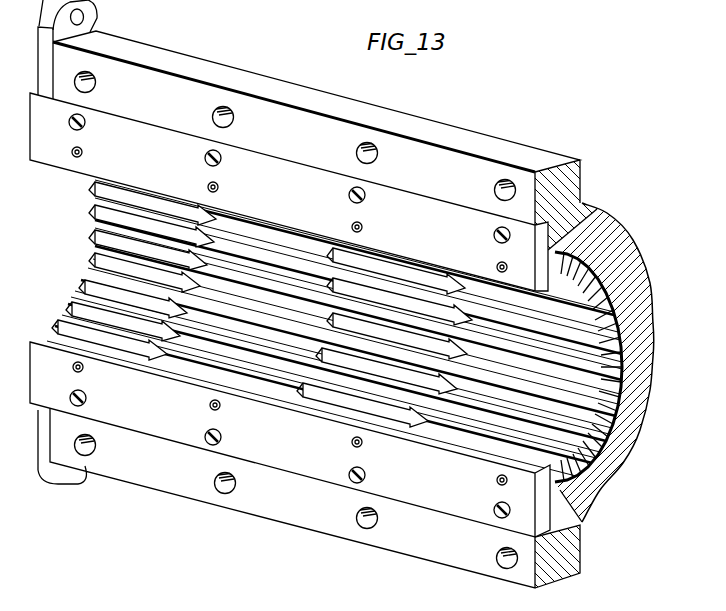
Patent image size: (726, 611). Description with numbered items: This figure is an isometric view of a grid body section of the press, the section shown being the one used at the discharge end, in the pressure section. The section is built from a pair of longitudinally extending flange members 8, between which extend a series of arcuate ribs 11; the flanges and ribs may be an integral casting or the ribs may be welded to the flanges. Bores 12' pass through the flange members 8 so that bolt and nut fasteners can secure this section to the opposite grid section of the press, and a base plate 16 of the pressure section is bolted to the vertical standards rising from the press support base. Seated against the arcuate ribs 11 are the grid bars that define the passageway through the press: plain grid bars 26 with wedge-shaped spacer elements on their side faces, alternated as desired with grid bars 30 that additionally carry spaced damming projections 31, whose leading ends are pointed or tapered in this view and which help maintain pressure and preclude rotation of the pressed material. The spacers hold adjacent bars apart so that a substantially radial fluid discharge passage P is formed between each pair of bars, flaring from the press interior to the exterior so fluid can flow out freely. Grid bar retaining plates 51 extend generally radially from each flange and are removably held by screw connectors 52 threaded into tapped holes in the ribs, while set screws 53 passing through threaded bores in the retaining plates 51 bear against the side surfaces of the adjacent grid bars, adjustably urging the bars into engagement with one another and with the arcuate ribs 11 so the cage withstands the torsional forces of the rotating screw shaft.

The flange member 8 is at (483, 143).
The arcuate rib 11 is at (630, 410).
The bore 12' is at (296, 321).
The base plate 16 is at (88, 20).
The grid bar 26 is at (607, 406).
The grid bar 30 is at (570, 430).
The damming projection 31 is at (72, 298).
The grid bar retaining plate 51 is at (437, 233).
The screw connector 52 is at (222, 162).
The set screw 53 is at (219, 189).
The fluid discharge passage P is at (612, 372).